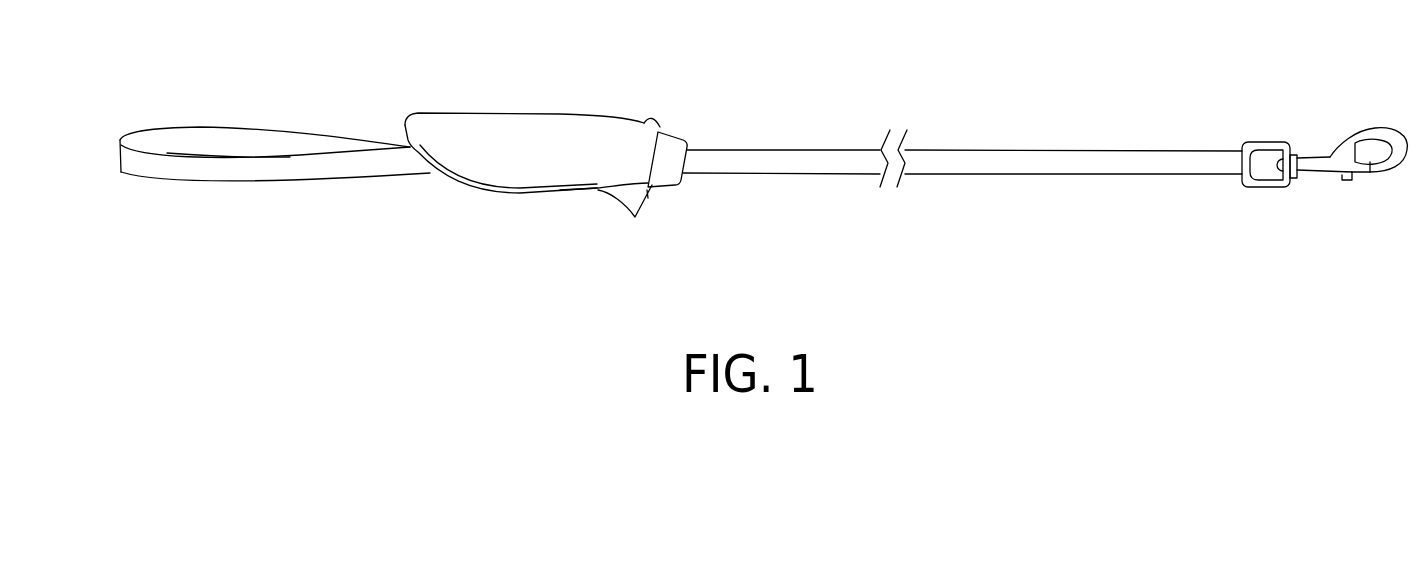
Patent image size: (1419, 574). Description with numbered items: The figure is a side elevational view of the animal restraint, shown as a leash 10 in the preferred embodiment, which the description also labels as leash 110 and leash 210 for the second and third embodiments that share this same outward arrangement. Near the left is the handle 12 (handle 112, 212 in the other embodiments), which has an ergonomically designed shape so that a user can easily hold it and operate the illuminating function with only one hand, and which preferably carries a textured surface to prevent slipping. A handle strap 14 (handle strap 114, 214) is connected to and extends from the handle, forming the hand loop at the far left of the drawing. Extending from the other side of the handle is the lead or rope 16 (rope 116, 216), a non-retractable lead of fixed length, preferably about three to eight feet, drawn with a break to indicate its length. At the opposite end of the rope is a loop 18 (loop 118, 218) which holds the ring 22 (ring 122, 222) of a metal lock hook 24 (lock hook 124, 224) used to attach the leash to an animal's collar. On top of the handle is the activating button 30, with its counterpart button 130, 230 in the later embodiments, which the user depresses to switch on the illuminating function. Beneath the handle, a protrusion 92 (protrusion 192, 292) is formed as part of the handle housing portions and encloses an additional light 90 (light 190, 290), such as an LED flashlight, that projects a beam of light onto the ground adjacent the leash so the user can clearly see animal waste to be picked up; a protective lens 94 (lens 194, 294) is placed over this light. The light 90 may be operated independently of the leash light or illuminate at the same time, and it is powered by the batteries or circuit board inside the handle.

The leash 10 is at (768, 152).
The leash 110 is at (768, 152).
The leash 210 is at (768, 152).
The handle 12 is at (555, 172).
The handle 112 is at (555, 172).
The handle 212 is at (555, 172).
The handle strap 14 is at (275, 192).
The handle strap 114 is at (275, 192).
The handle strap 214 is at (223, 175).
The lead or rope 16 is at (962, 194).
The lead or rope 116 is at (962, 194).
The lead or rope 216 is at (922, 175).
The loop 18 is at (1262, 178).
The loop 118 is at (1262, 178).
The loop 218 is at (1262, 178).
The ring 22 is at (1202, 123).
The ring 122 is at (1202, 123).
The ring 222 is at (1265, 143).
The metal lock hook 24 is at (1346, 190).
The metal lock hook 124 is at (1346, 190).
The metal lock hook 224 is at (1308, 167).
The activating button 30 is at (743, 131).
The end cap (second embodiment) 130 is at (743, 131).
The end cap (third embodiment) 230 is at (653, 122).
The light 90 is at (709, 241).
The light 190 is at (709, 241).
The light 290 is at (709, 241).
The protrusion 92 is at (540, 230).
The protrusion 192 is at (540, 230).
The protrusion 292 is at (540, 230).
The protective lens 94 is at (709, 241).
The protective lens 194 is at (709, 241).
The protective lens 294 is at (648, 196).